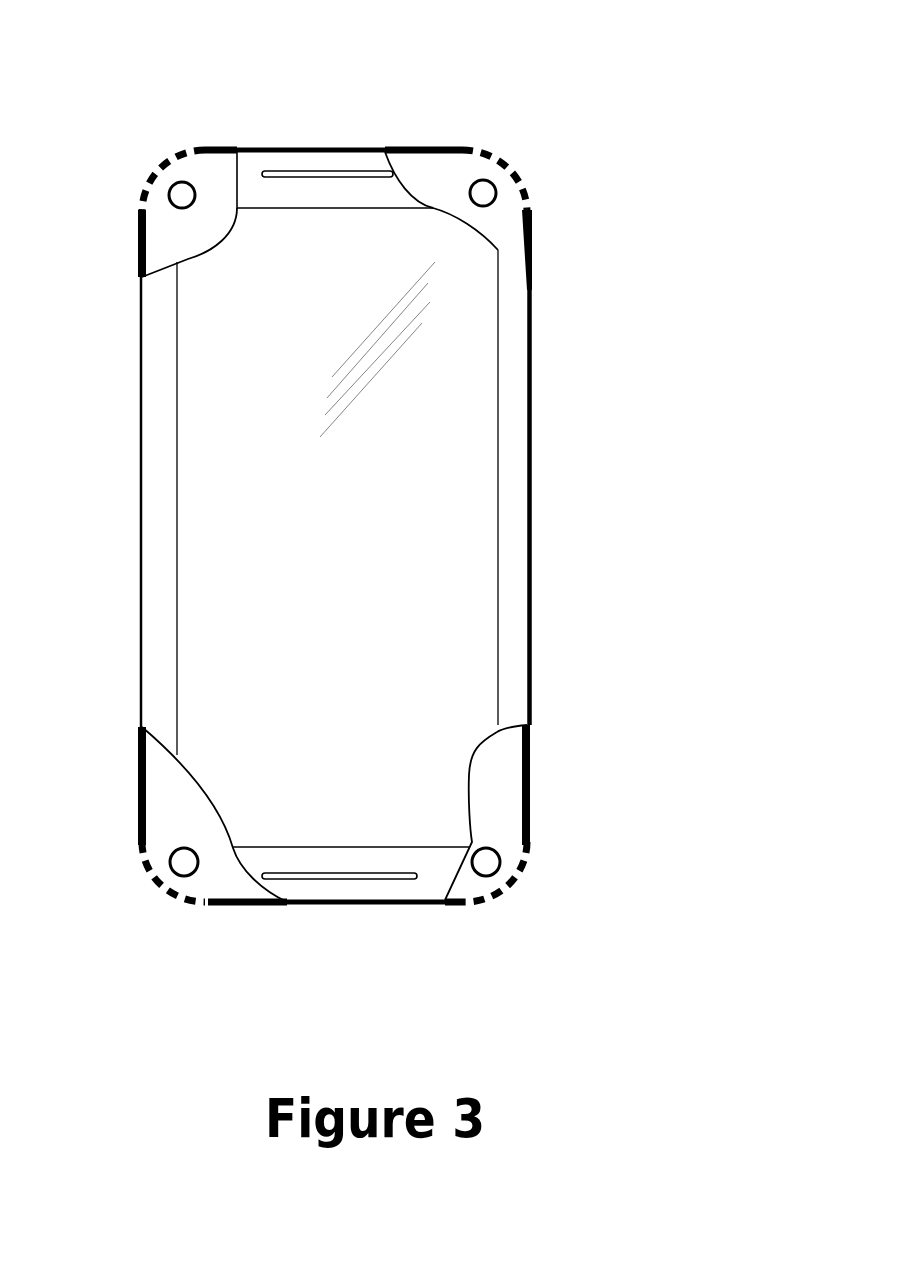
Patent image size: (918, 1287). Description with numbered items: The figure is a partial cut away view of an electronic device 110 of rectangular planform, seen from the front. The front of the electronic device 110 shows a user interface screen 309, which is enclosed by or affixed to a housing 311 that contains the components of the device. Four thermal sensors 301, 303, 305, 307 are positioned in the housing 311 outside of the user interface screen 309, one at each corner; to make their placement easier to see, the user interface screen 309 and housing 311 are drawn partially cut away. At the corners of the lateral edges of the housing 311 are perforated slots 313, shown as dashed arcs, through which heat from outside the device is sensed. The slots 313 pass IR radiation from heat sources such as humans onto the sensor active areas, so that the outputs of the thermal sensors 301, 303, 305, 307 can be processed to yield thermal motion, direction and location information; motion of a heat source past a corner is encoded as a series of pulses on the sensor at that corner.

The electronic device 110 is at (390, 90).
The thermal sensor 301 is at (182, 195).
The thermal sensor 303 is at (483, 193).
The thermal sensor 305 is at (184, 862).
The thermal sensor 307 is at (486, 862).
The user interface screen 309 is at (445, 492).
The housing 311 is at (515, 625).
The perforated slots 313 is at (530, 203).